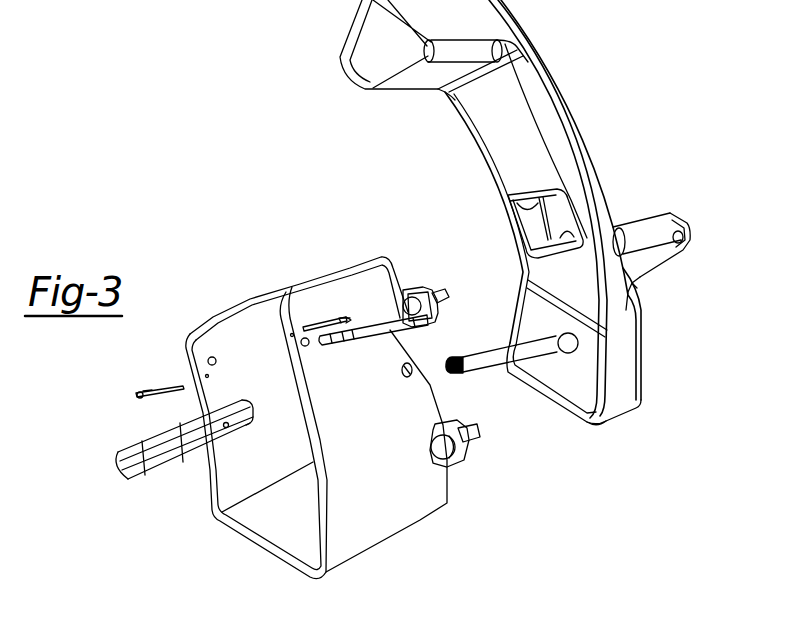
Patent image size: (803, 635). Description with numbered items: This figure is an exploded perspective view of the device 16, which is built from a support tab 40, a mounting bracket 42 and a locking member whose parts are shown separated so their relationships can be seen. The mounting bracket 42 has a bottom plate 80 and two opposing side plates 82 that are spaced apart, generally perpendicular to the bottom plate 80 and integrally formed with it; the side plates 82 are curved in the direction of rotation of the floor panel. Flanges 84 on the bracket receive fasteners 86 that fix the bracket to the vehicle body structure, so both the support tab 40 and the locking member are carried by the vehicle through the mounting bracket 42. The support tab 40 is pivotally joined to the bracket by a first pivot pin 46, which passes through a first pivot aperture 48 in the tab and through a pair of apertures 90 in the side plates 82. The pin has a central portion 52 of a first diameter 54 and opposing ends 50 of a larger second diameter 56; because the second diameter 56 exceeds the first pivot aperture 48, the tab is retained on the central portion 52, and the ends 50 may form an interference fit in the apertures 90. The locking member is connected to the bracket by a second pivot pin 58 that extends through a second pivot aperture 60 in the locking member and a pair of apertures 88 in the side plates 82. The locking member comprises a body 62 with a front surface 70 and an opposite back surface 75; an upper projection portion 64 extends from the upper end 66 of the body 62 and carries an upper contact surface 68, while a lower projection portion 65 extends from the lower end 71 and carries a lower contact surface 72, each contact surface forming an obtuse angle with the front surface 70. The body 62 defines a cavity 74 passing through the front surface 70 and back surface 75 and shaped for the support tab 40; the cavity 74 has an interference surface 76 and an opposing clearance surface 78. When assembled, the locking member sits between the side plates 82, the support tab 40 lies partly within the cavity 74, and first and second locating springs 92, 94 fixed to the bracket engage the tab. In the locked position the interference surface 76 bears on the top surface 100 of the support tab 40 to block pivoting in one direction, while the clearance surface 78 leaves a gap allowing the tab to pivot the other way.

The device 16 is at (230, 128).
The support tab 40 is at (128, 471).
The mounting bracket 42 is at (387, 503).
The first pivot pin 46 is at (345, 318).
The first pivot aperture 48 is at (230, 426).
The opposing ends 50 is at (321, 344).
The central portion 52 is at (370, 358).
The first diameter 54 is at (362, 309).
The second diameter 56 is at (407, 288).
The second pivot pin 58 is at (465, 358).
The second pivot aperture 60 is at (678, 236).
The body 62 is at (523, 72).
The upper projection portion 64 is at (332, 75).
The lower projection portion 65 is at (571, 388).
The upper end 66 is at (528, 37).
The upper contact surface 68 is at (397, 84).
The front surface 70 is at (466, 98).
The lower end 71 is at (628, 336).
The lower contact surface 72 is at (518, 298).
The cavity 74 is at (548, 220).
The back surface 75 is at (571, 81).
The interference surface 76 is at (531, 196).
The clearance surface 78 is at (597, 245).
The bottom plate 80 is at (215, 0).
The opposing side plates 82 is at (316, 518).
The flanges 84 is at (428, 287).
The fasteners 86 is at (405, 297).
The apertures 88 is at (413, 380).
The apertures 90 is at (305, 347).
The first locating spring 92 is at (282, 312).
The second locating spring 94 is at (167, 388).
The top surface 100 is at (142, 443).